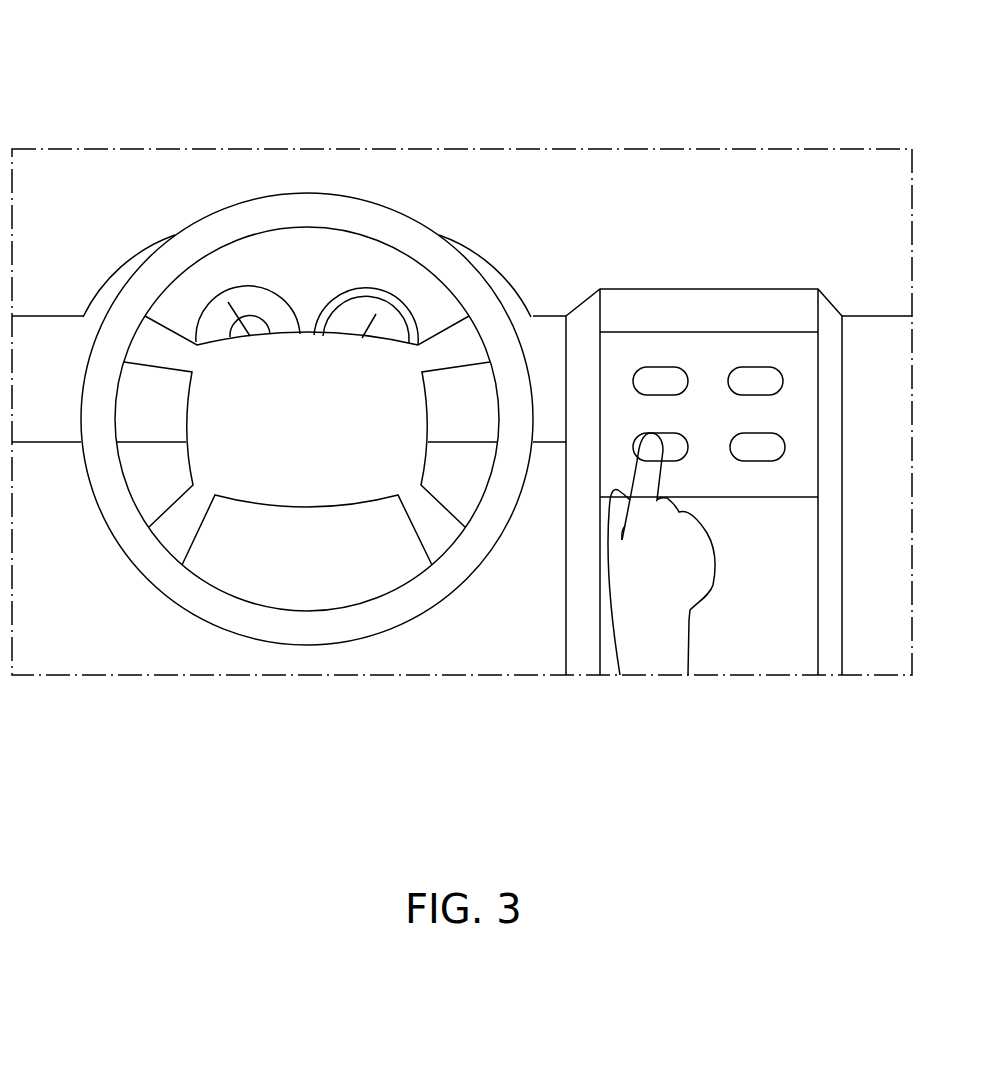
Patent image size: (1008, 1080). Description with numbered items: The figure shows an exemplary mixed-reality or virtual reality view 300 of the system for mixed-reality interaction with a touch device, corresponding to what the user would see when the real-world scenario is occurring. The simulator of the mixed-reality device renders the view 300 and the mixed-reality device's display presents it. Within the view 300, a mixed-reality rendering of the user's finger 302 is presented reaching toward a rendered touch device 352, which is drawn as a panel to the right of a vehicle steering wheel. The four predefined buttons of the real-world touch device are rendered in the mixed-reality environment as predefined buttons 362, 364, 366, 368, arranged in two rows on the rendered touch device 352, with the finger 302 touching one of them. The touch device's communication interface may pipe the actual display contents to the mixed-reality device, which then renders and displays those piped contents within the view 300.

The mixed-reality view 300 is at (112, 58).
The user's finger 302 is at (648, 562).
The control panel 352 is at (698, 289).
The predefined button 362 is at (655, 373).
The predefined button 364 is at (762, 375).
The predefined button 366 is at (677, 445).
The predefined button 368 is at (753, 443).